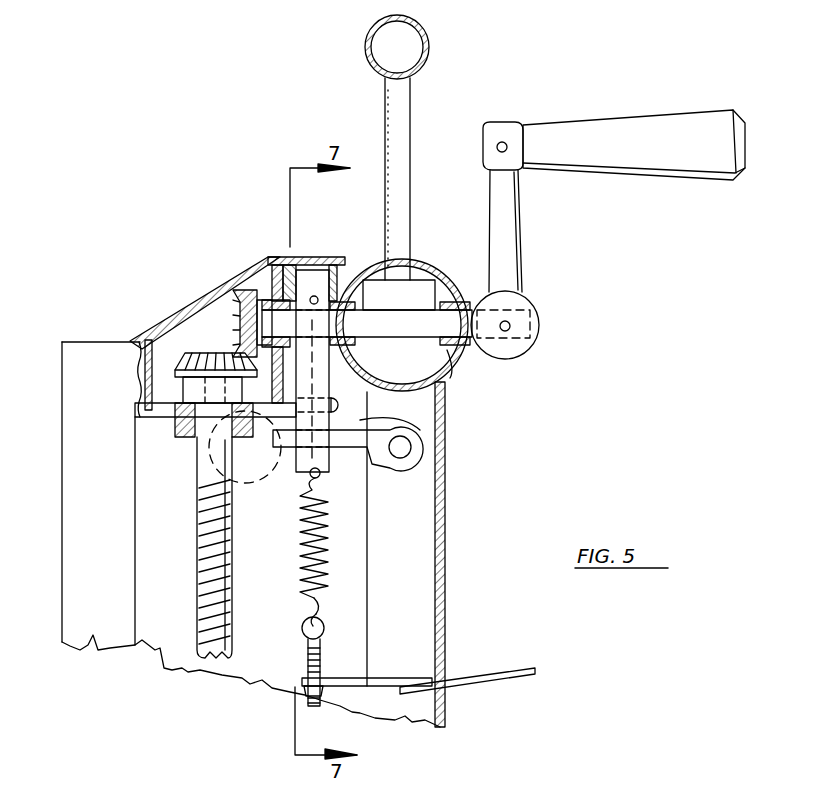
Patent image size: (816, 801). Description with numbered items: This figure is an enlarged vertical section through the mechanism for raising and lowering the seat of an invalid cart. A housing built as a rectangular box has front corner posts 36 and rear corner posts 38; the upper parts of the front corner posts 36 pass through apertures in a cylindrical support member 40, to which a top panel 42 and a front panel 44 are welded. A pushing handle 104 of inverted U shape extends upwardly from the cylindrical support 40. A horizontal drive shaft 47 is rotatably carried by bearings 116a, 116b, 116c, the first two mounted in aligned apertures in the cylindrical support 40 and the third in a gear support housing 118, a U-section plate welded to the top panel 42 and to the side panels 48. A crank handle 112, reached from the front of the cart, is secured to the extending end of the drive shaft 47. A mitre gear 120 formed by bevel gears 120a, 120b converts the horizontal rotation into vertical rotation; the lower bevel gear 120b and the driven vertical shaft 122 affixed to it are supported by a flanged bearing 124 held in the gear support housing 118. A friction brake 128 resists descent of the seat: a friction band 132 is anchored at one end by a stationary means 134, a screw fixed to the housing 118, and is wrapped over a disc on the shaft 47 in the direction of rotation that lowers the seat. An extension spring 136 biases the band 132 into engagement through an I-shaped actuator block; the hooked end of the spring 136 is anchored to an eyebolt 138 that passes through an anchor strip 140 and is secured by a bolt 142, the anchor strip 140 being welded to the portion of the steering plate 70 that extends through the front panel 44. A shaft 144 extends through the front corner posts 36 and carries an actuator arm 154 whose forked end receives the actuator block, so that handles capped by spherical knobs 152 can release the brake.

The handle 104 is at (428, 47).
The crank handle 112 is at (608, 115).
The horizontal drive shaft 47 is at (410, 325).
The cylindrical support member 40 is at (430, 268).
The top panel 42 is at (150, 345).
The gear support housing 118 is at (140, 365).
The rear corner posts 38 is at (106, 565).
The front corner posts 36 is at (420, 543).
The front panel 44 is at (445, 592).
The friction brake 128 is at (315, 293).
The bearing 116a is at (448, 378).
The bearing 116b is at (382, 262).
The bearing 116c is at (285, 262).
The mitre gear 120 is at (213, 360).
The bevel gear 120a is at (245, 298).
The bevel gear 120b is at (186, 385).
The flanged bearing 124 is at (186, 440).
The driven vertical shaft 122 is at (206, 514).
The spherical knobs 152 is at (282, 480).
The stationary means 134 is at (347, 406).
The actuator arm 154 is at (440, 440).
The shaft 144 is at (412, 452).
The extension spring 136 is at (300, 558).
The friction band 132 is at (322, 368).
The eyebolt 138 is at (306, 660).
The anchor strip 140 is at (355, 680).
The bolt 142 is at (300, 708).
The steering plate 70 is at (440, 673).
The side panels 48 is at (183, 672).